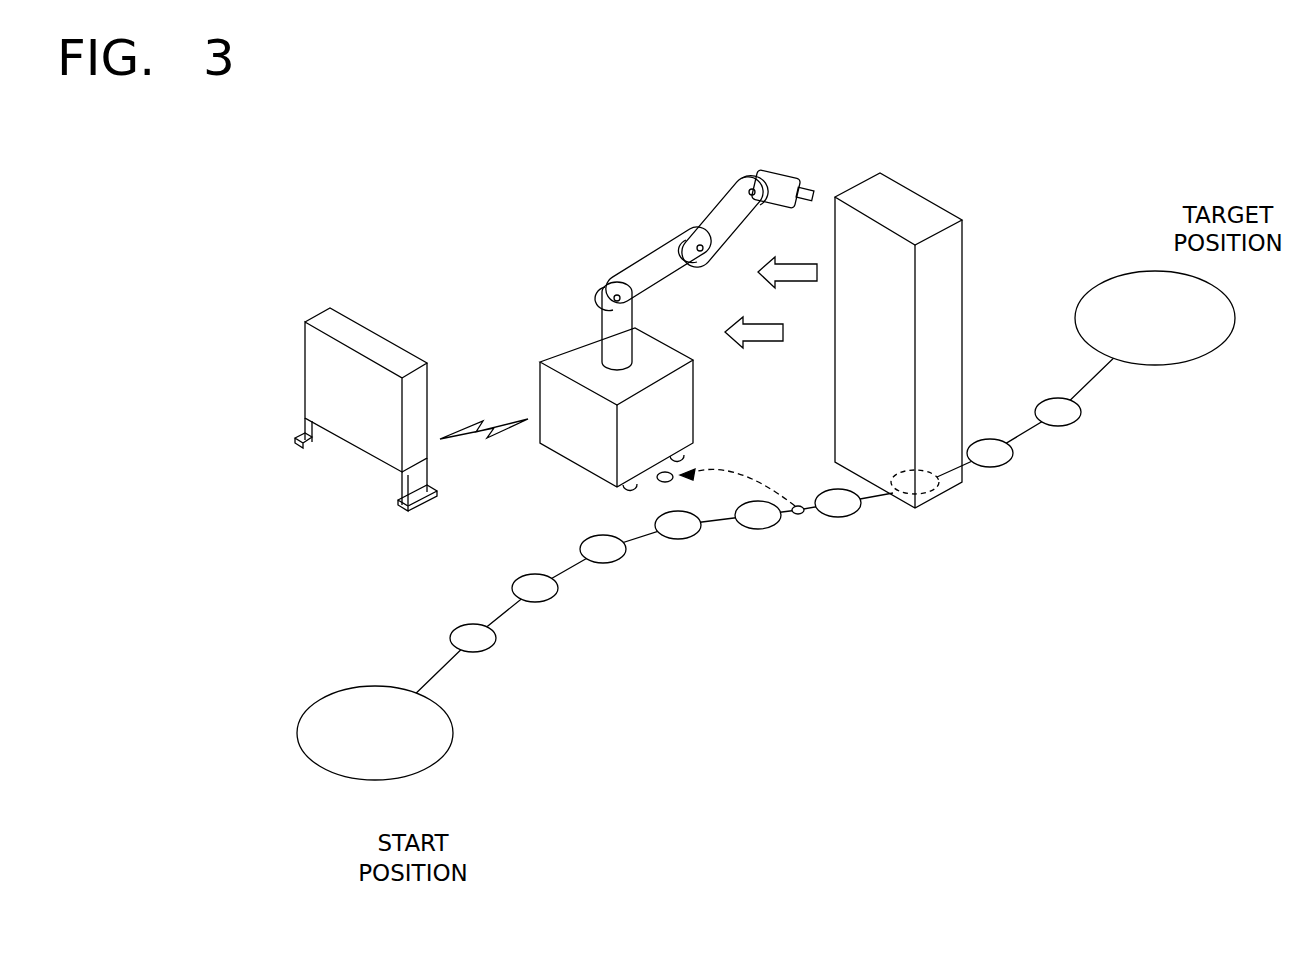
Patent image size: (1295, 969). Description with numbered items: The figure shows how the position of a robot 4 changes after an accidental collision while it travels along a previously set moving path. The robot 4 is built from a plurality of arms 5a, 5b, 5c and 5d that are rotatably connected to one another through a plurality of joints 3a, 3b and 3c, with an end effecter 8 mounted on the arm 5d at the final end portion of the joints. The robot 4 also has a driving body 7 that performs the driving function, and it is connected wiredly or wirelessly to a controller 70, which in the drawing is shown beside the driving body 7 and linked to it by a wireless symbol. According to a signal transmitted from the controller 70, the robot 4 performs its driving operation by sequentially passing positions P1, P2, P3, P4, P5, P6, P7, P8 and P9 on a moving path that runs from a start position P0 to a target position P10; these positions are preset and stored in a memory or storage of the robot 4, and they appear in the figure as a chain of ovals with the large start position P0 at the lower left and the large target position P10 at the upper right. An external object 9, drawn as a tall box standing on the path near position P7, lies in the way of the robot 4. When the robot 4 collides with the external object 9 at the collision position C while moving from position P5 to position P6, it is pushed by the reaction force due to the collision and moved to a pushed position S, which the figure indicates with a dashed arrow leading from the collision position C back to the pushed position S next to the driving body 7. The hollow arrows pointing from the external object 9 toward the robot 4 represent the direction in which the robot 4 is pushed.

The robot 4 is at (663, 228).
The joint 3a is at (606, 287).
The joint 3b is at (698, 250).
The joint 3c is at (752, 190).
The arm 5a is at (614, 335).
The arm 5b is at (641, 267).
The arm 5c is at (718, 207).
The arm 5d is at (787, 176).
The driving body 7 is at (538, 383).
The end effecter 8 is at (813, 192).
The external object 9 is at (958, 250).
The controller 70 is at (352, 320).
The pushed position S is at (658, 483).
The collision position C is at (800, 515).
The start position P0 is at (384, 742).
The position P1 is at (478, 655).
The position P2 is at (541, 606).
The position P3 is at (610, 566).
The position P4 is at (685, 541).
The position P5 is at (765, 532).
The position P6 is at (844, 521).
The position P7 is at (920, 500).
The position P8 is at (995, 470).
The position P9 is at (1064, 429).
The target position P10 is at (1168, 328).